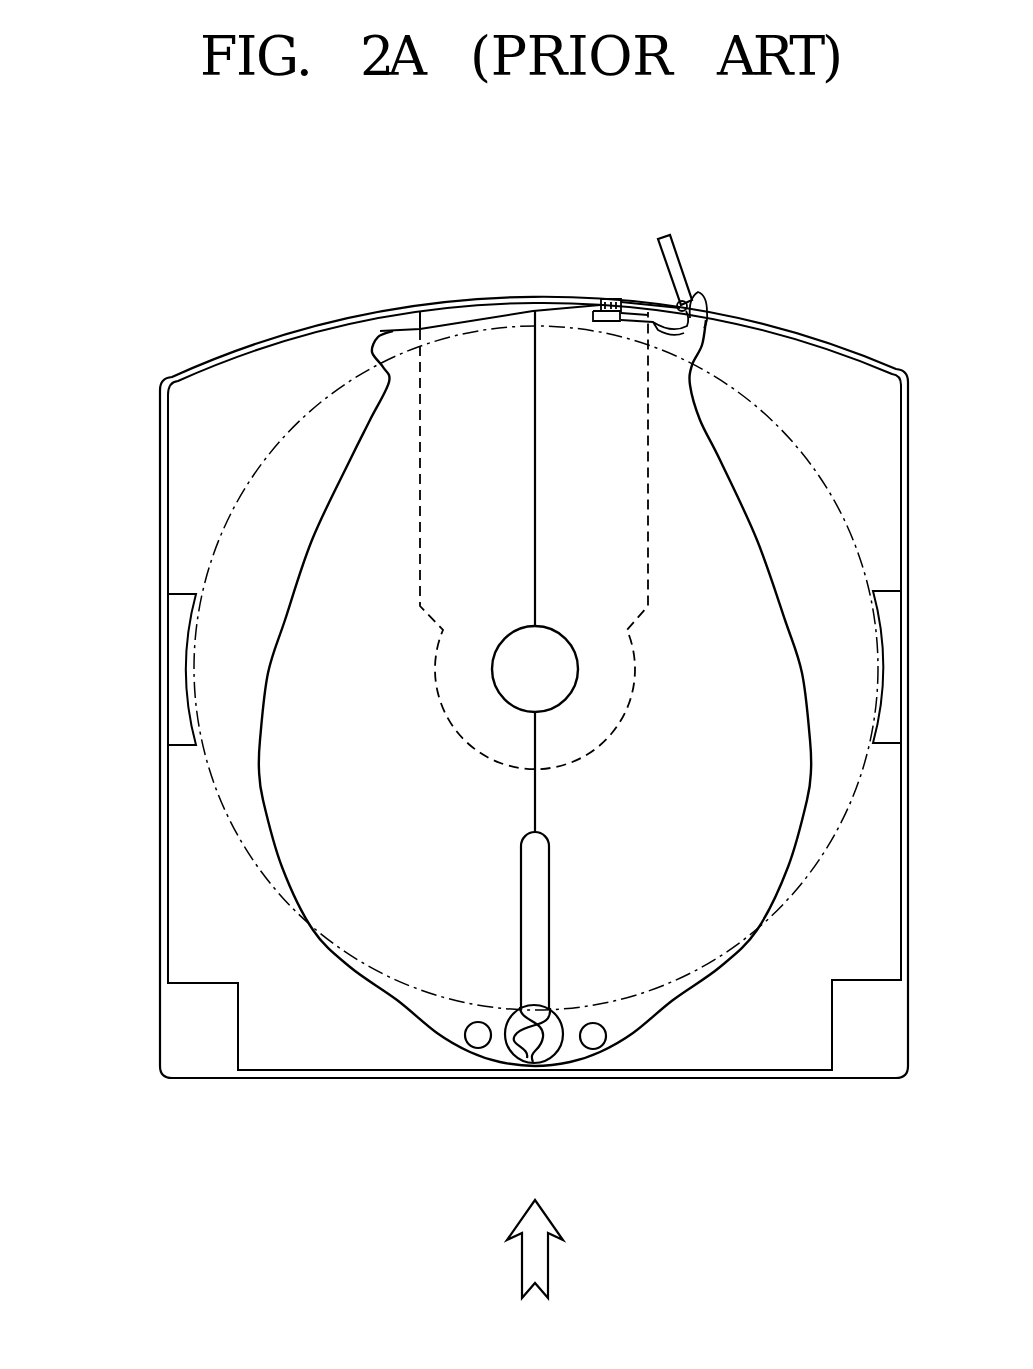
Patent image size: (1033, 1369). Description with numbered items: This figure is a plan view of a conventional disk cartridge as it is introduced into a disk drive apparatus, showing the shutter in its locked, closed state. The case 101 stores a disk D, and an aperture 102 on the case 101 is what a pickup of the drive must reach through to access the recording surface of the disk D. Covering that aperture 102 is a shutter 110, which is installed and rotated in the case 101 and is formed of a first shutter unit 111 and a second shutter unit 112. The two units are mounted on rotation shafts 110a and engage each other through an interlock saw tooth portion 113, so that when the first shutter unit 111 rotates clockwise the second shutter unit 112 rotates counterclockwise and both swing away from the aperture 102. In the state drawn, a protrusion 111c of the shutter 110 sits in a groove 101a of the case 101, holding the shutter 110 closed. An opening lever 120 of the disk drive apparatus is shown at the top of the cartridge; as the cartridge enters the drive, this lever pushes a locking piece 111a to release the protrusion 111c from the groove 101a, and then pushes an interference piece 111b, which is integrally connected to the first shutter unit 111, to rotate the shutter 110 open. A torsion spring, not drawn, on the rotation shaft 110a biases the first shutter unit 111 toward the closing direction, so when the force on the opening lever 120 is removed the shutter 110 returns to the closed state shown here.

The case 101 is at (165, 757).
The groove 101a is at (610, 298).
The aperture 102 is at (430, 548).
The disk D is at (260, 507).
The shutter 110 is at (465, 1020).
The first shutter unit 111 is at (559, 957).
The locking piece 111a is at (688, 308).
The interference piece 111b is at (703, 316).
The protrusion 111c is at (597, 298).
The second shutter unit 112 is at (367, 975).
The interlock saw tooth portion 113 is at (537, 1062).
The rotation shafts 110a is at (477, 1043).
The opening lever 120 is at (666, 236).